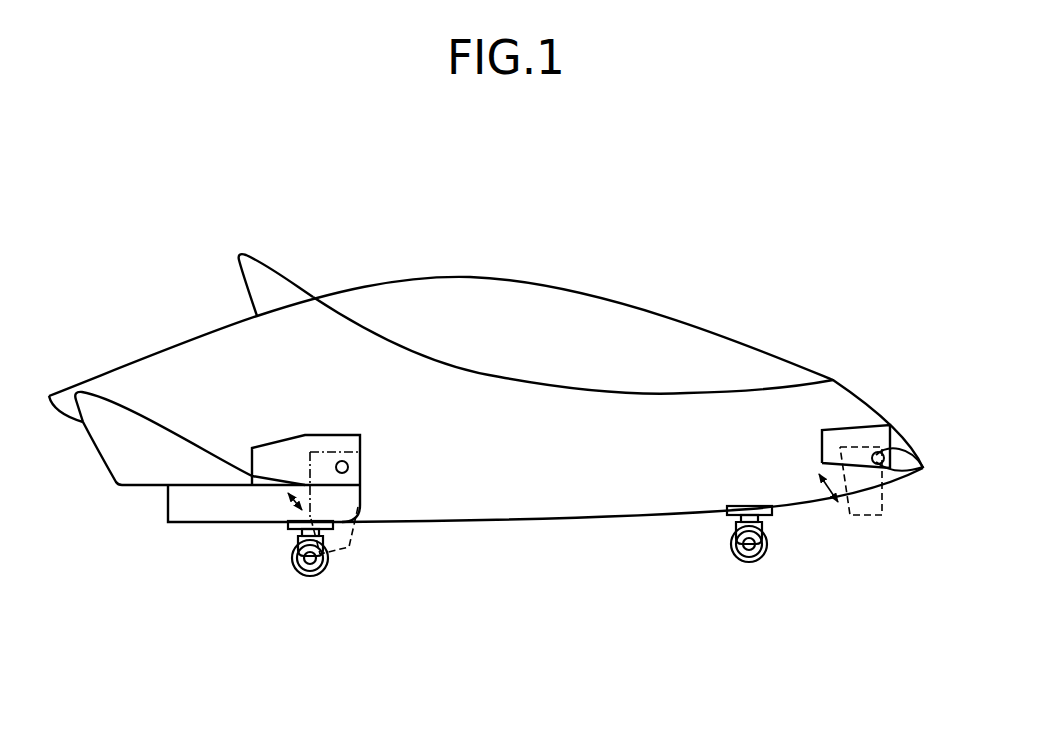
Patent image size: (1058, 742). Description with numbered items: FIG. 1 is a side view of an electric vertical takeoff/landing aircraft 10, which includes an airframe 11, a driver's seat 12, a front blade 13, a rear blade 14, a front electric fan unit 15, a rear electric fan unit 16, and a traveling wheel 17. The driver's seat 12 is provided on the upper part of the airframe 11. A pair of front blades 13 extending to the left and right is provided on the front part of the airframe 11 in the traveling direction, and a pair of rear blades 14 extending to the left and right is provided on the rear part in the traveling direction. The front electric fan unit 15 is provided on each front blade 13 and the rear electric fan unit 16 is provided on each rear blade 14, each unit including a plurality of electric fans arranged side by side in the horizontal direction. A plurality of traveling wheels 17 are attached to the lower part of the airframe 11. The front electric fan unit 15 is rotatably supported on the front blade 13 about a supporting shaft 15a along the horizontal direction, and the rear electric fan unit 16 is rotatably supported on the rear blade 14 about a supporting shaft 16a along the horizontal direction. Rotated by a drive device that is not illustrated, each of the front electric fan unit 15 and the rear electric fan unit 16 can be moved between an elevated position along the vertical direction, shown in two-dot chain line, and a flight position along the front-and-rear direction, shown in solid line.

The electric vertical takeoff/landing aircraft 10 is at (699, 198).
The airframe 11 is at (580, 494).
The driver's seat 12 is at (547, 307).
The front blade 13 is at (903, 457).
The rear blade 14 is at (205, 507).
The front electric fan unit 15 is at (853, 425).
The supporting shaft 15a is at (878, 468).
The rear electric fan unit 16 is at (275, 452).
The supporting shaft 16a is at (350, 467).
The traveling wheel 17 is at (307, 579).